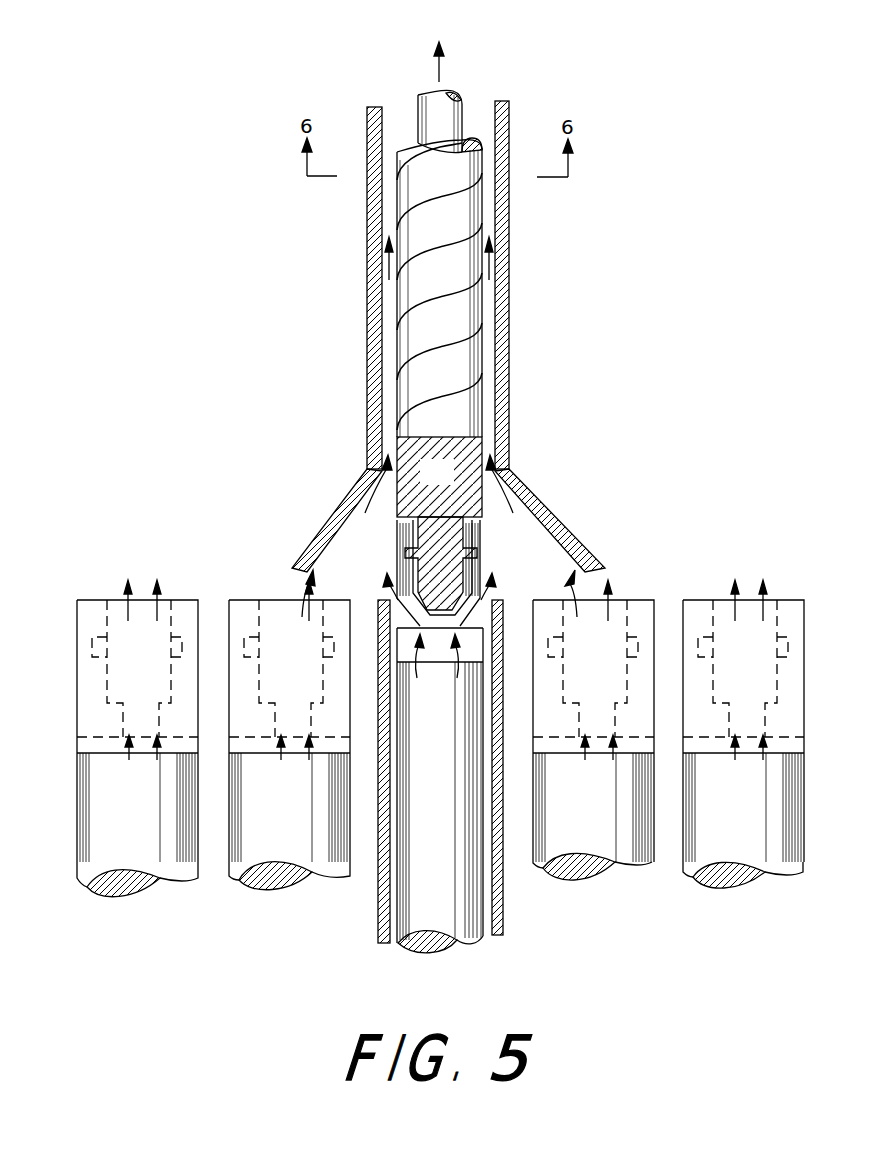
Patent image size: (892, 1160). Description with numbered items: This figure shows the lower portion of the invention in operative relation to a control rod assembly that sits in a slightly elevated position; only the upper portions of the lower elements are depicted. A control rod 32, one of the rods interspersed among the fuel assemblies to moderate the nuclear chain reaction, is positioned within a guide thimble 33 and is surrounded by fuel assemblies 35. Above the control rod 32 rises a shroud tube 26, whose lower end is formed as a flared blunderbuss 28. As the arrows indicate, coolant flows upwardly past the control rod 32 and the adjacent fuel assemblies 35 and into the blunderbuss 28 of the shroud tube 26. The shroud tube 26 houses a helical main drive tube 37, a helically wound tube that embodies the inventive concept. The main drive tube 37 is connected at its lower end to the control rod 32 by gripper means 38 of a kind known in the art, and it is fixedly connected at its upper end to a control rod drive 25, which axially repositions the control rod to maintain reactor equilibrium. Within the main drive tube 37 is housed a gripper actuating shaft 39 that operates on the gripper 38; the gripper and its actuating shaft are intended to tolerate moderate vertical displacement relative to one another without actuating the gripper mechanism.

The control rod drive 25 is at (440, 42).
The shroud tube 26 is at (509, 330).
The blunderbuss 28 is at (537, 497).
The control rod 32 is at (463, 893).
The guide thimble 33 is at (383, 934).
The fuel assemblies 35 is at (228, 872).
The helical main drive tube 37 is at (458, 216).
The gripper means 38 is at (450, 484).
The gripper actuating shaft 39 is at (418, 108).